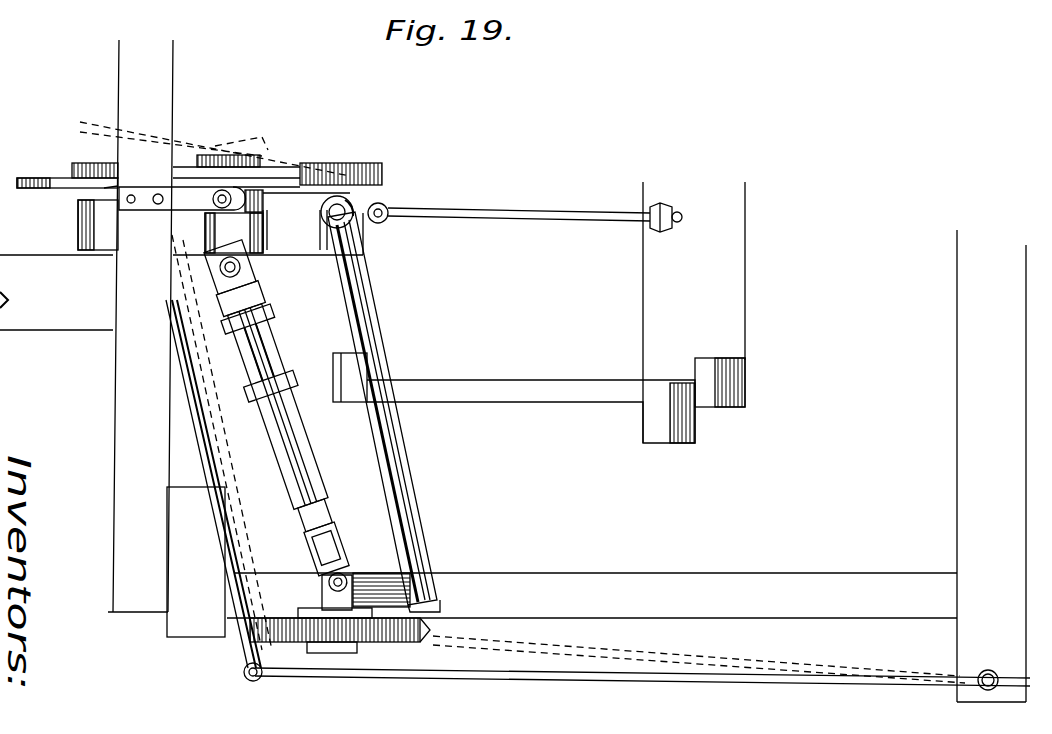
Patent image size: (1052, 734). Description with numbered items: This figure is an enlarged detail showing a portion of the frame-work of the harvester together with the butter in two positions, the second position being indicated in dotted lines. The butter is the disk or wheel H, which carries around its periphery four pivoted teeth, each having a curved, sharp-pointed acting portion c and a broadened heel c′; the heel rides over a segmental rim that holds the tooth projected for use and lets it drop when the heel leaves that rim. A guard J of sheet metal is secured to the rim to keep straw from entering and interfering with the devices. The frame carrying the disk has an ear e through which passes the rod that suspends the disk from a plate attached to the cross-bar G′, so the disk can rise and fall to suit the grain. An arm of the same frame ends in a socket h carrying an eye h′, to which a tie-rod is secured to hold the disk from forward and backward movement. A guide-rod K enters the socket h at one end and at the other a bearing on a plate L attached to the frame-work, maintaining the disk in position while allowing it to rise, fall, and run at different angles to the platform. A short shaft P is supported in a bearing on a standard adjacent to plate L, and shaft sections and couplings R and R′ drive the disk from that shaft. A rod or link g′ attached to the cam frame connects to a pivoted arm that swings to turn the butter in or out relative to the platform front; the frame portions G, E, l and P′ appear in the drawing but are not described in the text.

The acting portion of tooth c is at (67, 173).
The heel of tooth c′ is at (395, 195).
The ear or projection e is at (215, 198).
The guard J is at (86, 225).
The disk or wheel (butter) H is at (341, 165).
The socket or tubular head h is at (322, 222).
The eye or ear h′ is at (392, 208).
The shaft section or coupling R′ is at (268, 348).
The shaft section or coupling R is at (278, 407).
The guide-rod K is at (375, 372).
The plate or support L is at (290, 600).
The lever pin l is at (362, 578).
The short shaft P is at (371, 590).
The ratchet gear P′ is at (415, 645).
The guide block G is at (196, 562).
The cross-bar G′ is at (163, 365).
The rod or link g′ is at (203, 437).
The bed beam E is at (592, 595).